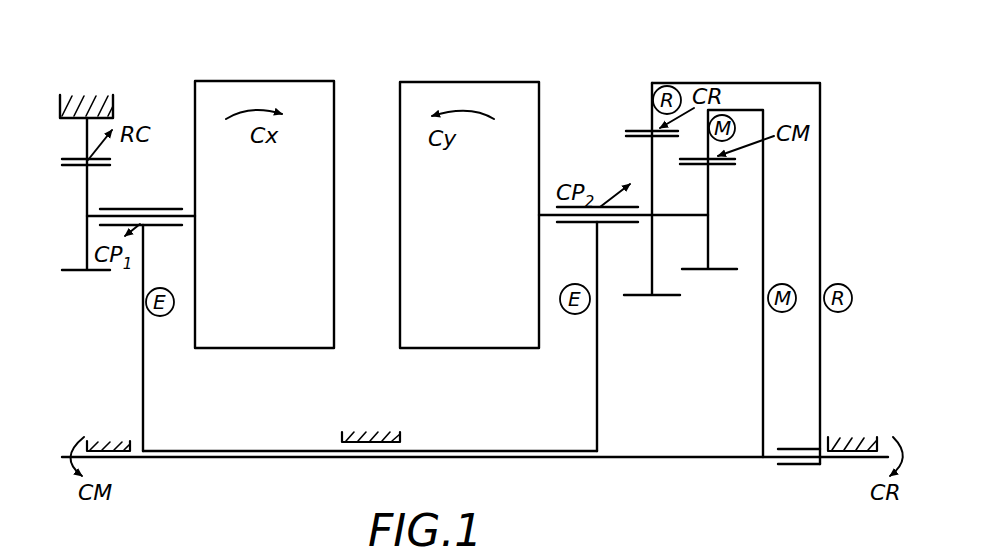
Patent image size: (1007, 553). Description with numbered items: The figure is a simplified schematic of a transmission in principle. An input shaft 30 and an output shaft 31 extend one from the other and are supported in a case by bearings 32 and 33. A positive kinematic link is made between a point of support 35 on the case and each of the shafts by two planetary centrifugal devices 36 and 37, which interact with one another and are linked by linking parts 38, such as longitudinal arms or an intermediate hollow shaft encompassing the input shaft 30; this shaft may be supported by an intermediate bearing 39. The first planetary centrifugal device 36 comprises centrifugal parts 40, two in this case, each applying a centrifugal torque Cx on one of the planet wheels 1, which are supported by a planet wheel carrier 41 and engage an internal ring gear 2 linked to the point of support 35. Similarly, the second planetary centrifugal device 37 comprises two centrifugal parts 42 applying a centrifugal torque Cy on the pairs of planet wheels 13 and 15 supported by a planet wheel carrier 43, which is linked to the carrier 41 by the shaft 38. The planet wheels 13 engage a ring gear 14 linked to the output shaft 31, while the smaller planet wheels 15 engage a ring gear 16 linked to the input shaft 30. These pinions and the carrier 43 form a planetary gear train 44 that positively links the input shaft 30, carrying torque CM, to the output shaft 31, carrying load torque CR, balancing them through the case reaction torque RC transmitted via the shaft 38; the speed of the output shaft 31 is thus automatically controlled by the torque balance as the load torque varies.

The planet wheels 1 is at (87, 185).
The internal ring gear 2 is at (75, 158).
The planet wheels 13 is at (649, 150).
The ring gear 14 is at (650, 112).
The planet wheels 15 is at (708, 248).
The ring gear 16 is at (705, 146).
The input shaft 30 is at (300, 458).
The output shaft 31 is at (862, 457).
The bearing 32 is at (106, 441).
The bearing 33 is at (852, 437).
The point of support 35 is at (97, 95).
The first planetary centrifugal device 36 is at (278, 78).
The second planetary centrifugal device 37 is at (452, 76).
The linking parts 38 is at (466, 451).
The intermediate bearing 39 is at (364, 434).
The centrifugal parts 40 is at (246, 92).
The planet wheel carrier 41 is at (143, 348).
The centrifugal parts 42 is at (512, 95).
The planet wheel carrier 43 is at (597, 398).
The planetary gear train 44 is at (636, 84).